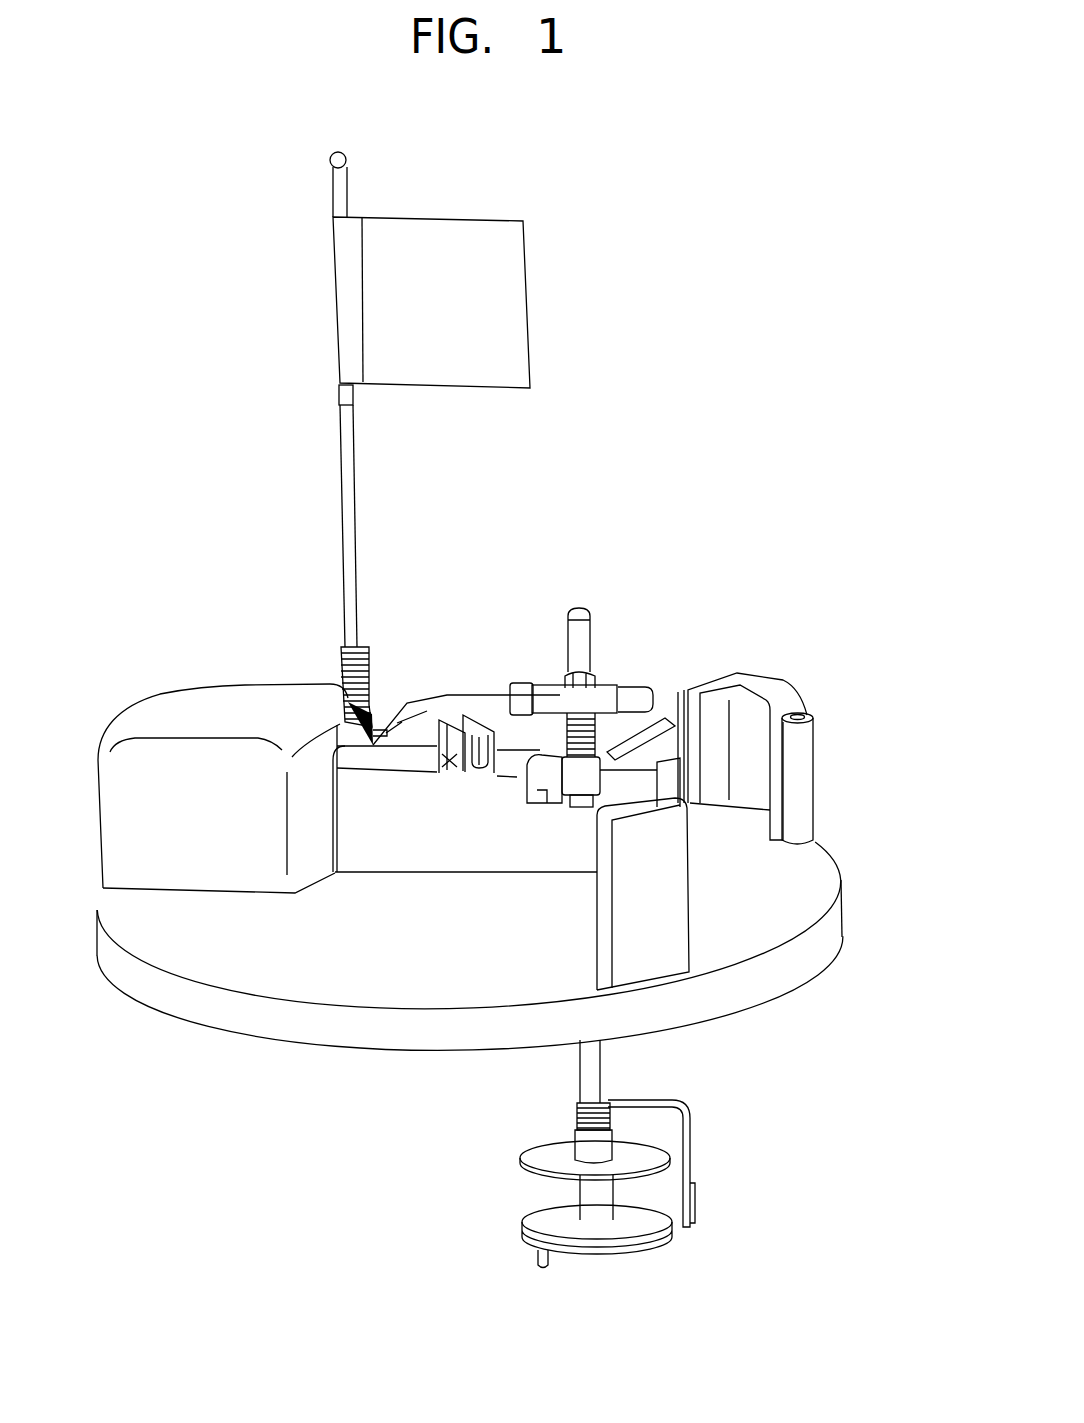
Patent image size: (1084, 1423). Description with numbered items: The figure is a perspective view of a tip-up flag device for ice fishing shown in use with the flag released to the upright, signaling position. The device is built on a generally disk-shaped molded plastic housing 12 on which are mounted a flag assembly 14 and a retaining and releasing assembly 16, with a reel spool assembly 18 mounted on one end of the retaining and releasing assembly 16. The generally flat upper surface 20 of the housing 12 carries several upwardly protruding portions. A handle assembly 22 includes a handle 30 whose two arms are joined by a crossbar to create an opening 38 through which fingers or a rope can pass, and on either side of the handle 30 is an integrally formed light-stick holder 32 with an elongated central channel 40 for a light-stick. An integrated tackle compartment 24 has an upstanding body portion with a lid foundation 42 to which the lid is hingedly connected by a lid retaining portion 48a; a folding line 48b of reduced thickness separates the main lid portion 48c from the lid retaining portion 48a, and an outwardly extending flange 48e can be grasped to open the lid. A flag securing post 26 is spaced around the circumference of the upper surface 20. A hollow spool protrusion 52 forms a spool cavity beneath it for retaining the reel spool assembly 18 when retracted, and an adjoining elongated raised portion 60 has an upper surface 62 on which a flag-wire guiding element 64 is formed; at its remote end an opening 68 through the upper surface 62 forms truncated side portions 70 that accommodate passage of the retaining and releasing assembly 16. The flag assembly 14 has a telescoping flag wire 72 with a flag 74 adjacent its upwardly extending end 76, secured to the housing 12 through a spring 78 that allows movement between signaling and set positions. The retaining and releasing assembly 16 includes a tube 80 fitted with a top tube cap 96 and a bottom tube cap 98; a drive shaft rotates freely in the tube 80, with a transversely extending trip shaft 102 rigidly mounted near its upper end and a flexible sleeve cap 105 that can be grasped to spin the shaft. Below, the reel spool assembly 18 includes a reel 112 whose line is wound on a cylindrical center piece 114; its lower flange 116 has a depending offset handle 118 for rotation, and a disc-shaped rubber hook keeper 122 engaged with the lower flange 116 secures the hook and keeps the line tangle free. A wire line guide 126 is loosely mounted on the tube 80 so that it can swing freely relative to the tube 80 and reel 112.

The housing 12 is at (138, 1020).
The flag assembly 14 is at (290, 290).
The retaining and releasing assembly 16 is at (603, 656).
The reel spool assembly 18 is at (485, 1163).
The upper surface 20 is at (822, 878).
The handle assembly 22 is at (792, 671).
The integrated tackle compartment 24 is at (454, 681).
The flag securing post 26 is at (633, 914).
The handle 30 is at (745, 678).
The light-stick holder 32 is at (810, 766).
The opening 38 is at (750, 782).
The elongated central channel 40 is at (808, 712).
The lid foundation 42 is at (668, 772).
The lid retaining portion 48a is at (681, 700).
The folding line 48b is at (630, 723).
The main lid portion 48c is at (470, 705).
The flange 48e is at (405, 703).
The spool protrusion 52 is at (157, 713).
The elongated raised portion 60 is at (390, 845).
The upper surface 62 is at (378, 762).
The flag-wire guiding element 64 is at (449, 768).
The opening 68 is at (548, 798).
The truncated side portions 70 is at (585, 820).
The flag wire 72 is at (345, 438).
The flag 74 is at (452, 230).
The upwardly extending end 76 is at (338, 152).
The spring 78 is at (345, 665).
The tube 80 is at (598, 1060).
The top tube cap 96 is at (560, 790).
The bottom tube cap 98 is at (612, 1145).
The trip shaft 102 is at (556, 690).
The flexible sleeve cap 105 is at (578, 608).
The reel 112 is at (540, 1150).
The cylindrical center piece 114 is at (597, 1215).
The lower flange 116 is at (540, 1222).
The handle 118 is at (538, 1258).
The hook keeper 122 is at (650, 1247).
The line guide 126 is at (692, 1185).